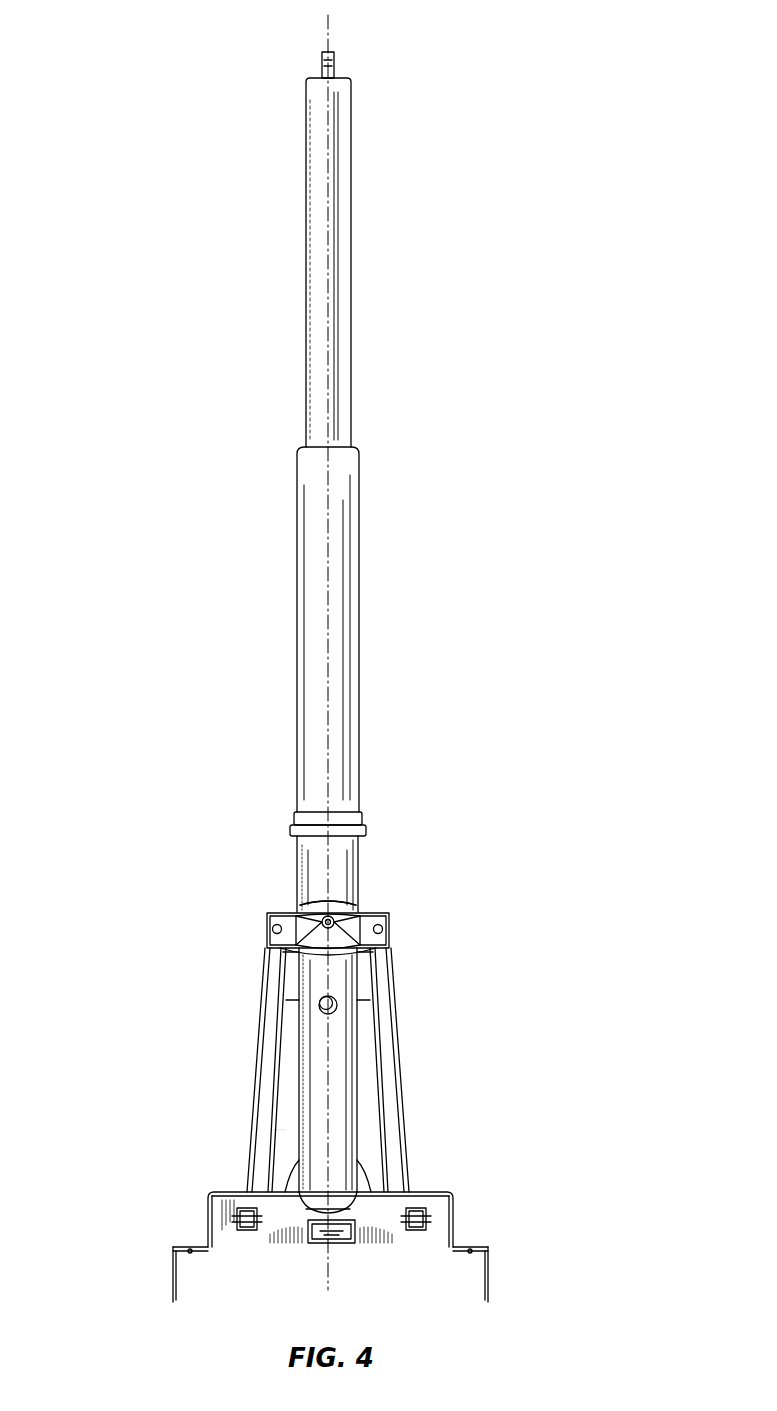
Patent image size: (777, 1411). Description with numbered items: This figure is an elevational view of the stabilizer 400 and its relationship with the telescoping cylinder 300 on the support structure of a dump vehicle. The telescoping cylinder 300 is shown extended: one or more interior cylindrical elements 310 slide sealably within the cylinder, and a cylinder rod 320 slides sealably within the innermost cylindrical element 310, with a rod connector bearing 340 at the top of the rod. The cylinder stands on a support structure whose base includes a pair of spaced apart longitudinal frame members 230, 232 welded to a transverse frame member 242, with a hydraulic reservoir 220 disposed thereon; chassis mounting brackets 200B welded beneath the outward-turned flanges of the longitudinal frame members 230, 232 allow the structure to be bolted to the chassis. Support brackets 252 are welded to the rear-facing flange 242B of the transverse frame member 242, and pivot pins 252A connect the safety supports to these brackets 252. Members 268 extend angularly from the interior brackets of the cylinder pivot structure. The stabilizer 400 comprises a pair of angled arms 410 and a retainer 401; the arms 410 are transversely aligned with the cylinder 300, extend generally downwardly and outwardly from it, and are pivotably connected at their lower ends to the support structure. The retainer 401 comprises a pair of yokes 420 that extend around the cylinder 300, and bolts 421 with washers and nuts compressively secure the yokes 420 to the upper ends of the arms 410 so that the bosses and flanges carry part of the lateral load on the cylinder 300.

The rod connector bearing 340 is at (334, 54).
The cylinder rod 320 is at (343, 247).
The interior cylindrical element 310 is at (343, 625).
The telescoping cylinder 300 is at (340, 878).
The retainer 401 is at (374, 910).
The bolt assembly 421 is at (275, 926).
The yoke 420 is at (396, 938).
The stabilizer 400 is at (403, 1048).
The angled arm 410 is at (385, 1075).
The hydraulic reservoir 220 is at (283, 1127).
The member 268 is at (291, 1190).
The rear-facing flange 242B is at (380, 1215).
The longitudinal frame member 230 is at (208, 1243).
The longitudinal frame member 232 is at (450, 1243).
The chassis mounting bracket 200B is at (172, 1265).
The support bracket 252 is at (237, 1226).
The pivot pin 252A is at (249, 1226).
The transverse frame member 242 is at (365, 1248).